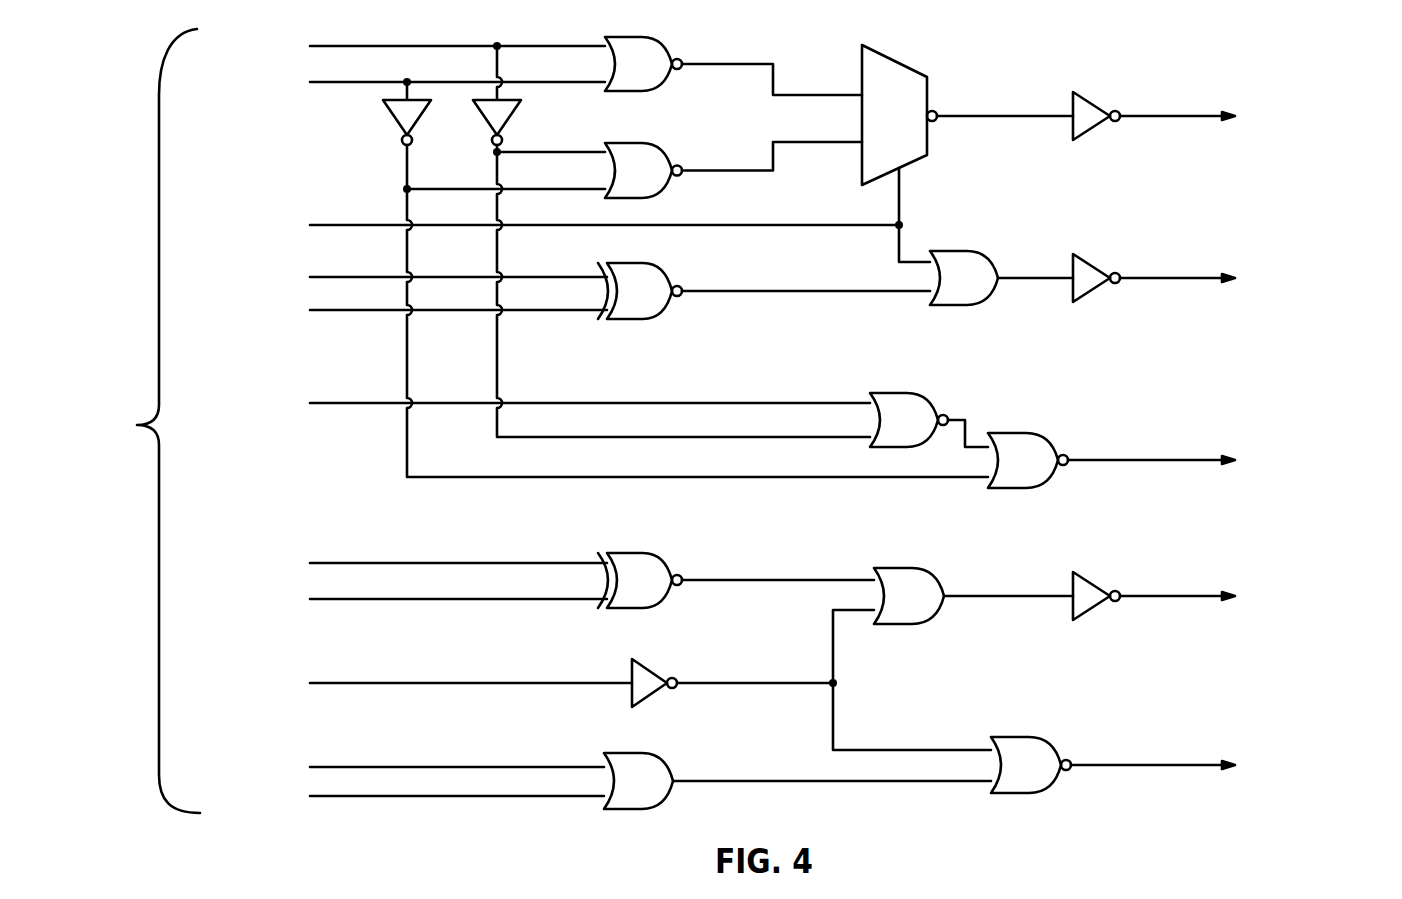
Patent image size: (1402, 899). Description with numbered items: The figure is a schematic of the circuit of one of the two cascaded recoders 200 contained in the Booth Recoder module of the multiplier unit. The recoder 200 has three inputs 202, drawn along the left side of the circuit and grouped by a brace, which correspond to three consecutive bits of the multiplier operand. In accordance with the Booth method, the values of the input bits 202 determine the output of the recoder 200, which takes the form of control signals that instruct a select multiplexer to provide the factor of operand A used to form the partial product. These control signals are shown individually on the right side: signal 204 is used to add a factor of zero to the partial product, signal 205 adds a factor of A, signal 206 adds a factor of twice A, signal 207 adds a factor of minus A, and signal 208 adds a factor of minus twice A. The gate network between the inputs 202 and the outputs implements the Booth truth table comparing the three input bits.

The recoder 200 is at (930, 838).
The input bits 202 is at (491, 421).
The signal 204 is at (1198, 113).
The signal 205 is at (1198, 275).
The signal 206 is at (1198, 457).
The signal 207 is at (1198, 594).
The signal 208 is at (1198, 762).